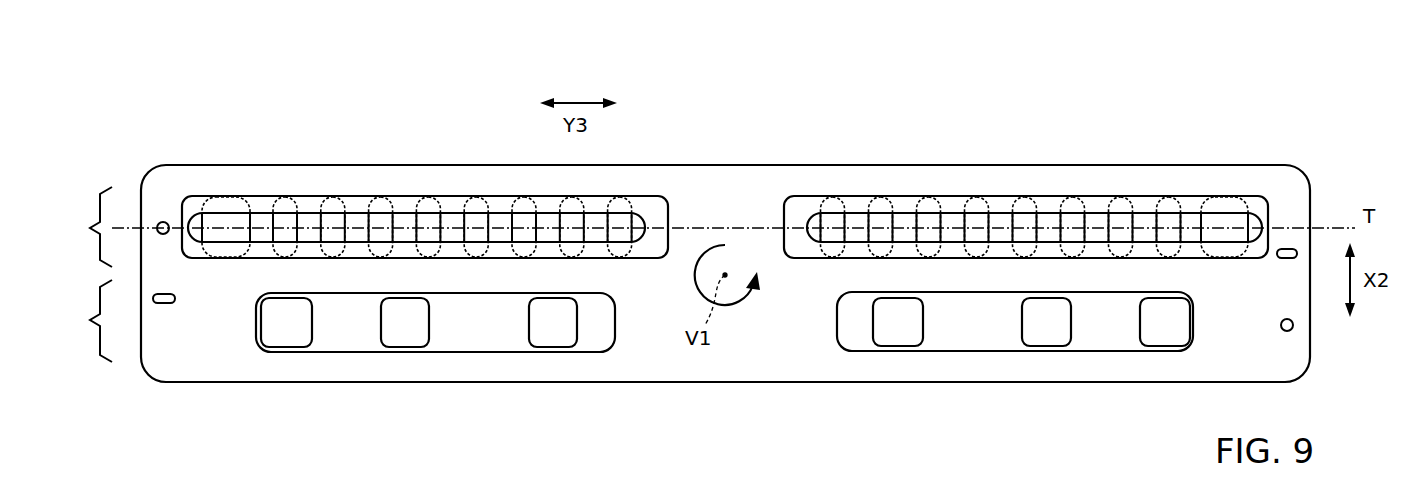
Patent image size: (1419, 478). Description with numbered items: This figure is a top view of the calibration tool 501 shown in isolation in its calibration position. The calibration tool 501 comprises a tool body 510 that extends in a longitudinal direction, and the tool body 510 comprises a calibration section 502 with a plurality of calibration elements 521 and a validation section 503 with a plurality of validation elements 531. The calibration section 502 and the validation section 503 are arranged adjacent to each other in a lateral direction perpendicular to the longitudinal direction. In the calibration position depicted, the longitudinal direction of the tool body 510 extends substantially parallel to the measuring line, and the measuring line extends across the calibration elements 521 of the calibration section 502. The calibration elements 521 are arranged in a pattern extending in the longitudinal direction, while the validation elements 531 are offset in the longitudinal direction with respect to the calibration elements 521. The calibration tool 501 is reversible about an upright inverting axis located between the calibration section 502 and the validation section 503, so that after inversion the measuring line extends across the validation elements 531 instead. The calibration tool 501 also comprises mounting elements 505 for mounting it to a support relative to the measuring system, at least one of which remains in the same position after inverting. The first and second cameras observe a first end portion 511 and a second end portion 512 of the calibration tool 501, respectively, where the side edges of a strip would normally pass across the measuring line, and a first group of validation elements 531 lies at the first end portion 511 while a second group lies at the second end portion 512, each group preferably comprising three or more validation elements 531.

The calibration tool 501 is at (126, 140).
The calibration section 502 is at (665, 245).
The validation section 503 is at (613, 321).
The mounting elements 505 is at (163, 221).
The tool body 510 is at (735, 188).
The first end portion 511 is at (680, 78).
The second end portion 512 is at (1283, 78).
The calibration elements 521 is at (382, 222).
The validation elements 531 is at (295, 330).